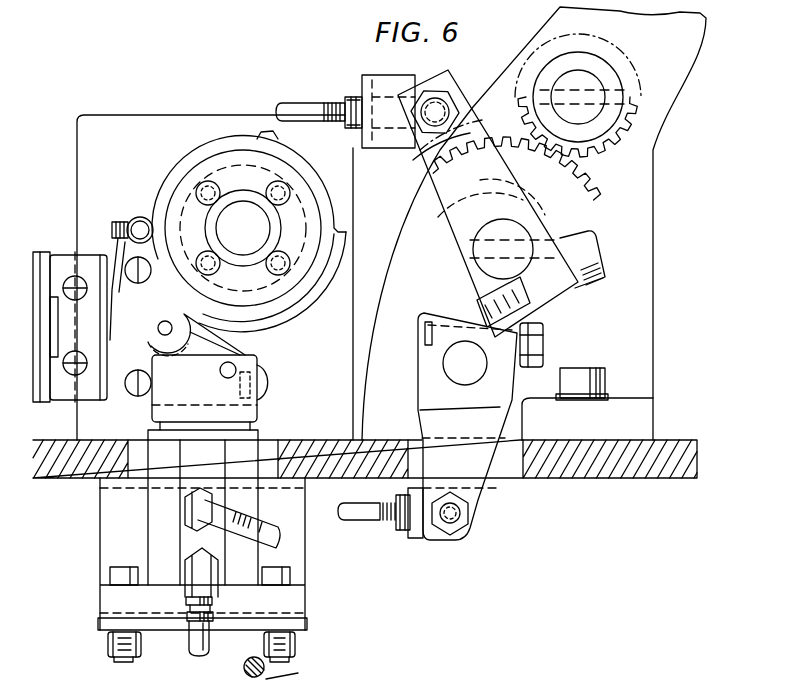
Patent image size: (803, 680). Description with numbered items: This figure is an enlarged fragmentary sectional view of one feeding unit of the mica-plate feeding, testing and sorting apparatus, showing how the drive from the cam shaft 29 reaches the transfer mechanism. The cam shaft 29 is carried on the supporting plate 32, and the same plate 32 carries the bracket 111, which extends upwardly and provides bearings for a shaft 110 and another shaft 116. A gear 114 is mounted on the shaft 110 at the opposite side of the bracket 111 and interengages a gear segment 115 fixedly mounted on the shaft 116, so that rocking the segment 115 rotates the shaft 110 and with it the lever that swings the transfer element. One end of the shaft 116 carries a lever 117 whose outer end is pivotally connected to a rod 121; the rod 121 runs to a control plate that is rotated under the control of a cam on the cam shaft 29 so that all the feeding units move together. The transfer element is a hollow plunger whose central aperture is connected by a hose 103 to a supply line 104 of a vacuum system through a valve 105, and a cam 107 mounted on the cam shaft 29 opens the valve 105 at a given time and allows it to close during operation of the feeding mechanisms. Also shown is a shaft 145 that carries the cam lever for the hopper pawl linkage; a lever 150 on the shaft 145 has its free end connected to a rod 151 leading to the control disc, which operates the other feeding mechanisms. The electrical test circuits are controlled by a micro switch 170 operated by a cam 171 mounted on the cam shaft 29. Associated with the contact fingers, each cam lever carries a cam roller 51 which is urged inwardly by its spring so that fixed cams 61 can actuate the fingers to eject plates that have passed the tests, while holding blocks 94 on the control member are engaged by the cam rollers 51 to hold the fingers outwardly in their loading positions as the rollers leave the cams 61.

The cam shaft 29 is at (237, 205).
The supporting plate 32 is at (677, 478).
The cam roller 51 is at (246, 668).
The fixed cam 61 is at (200, 650).
The holding block 94 is at (294, 672).
The hose 103 is at (272, 532).
The supply line 104 is at (194, 640).
The valve 105 is at (222, 352).
The cam 107 is at (308, 300).
The shaft 110 is at (595, 82).
The bracket 111 is at (643, 254).
The gear 114 is at (612, 130).
The gear segment 115 is at (584, 175).
The shaft 116 is at (488, 266).
The lever 117 is at (498, 178).
The rod 121 is at (306, 103).
The shaft 145 is at (449, 362).
The lever 150 is at (478, 483).
The rod 151 is at (368, 506).
The micro switch 170 is at (68, 262).
The cam 171 is at (147, 221).